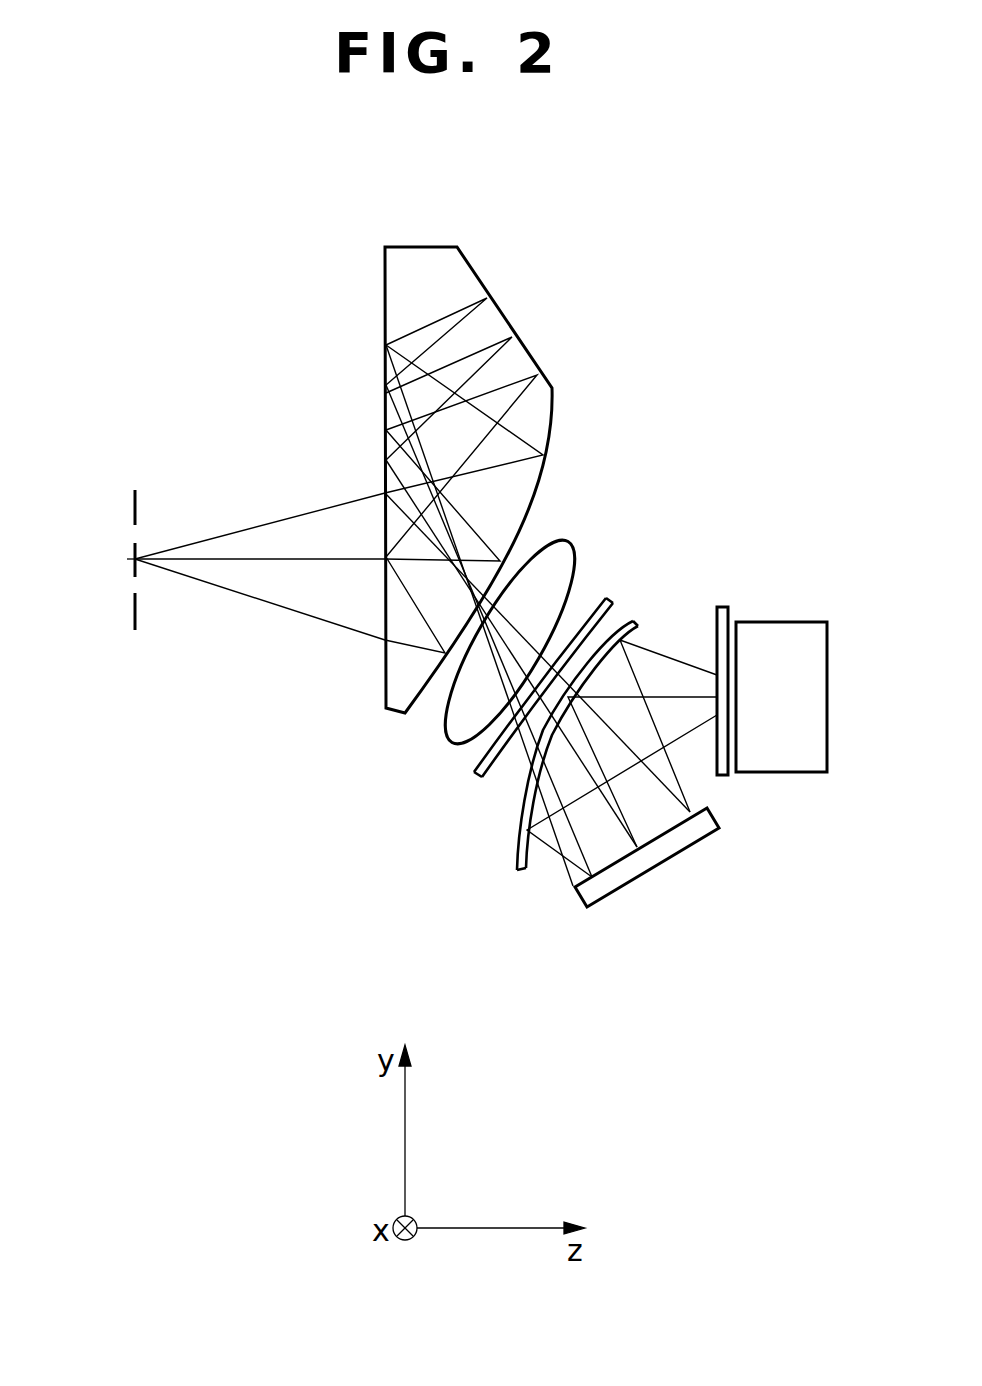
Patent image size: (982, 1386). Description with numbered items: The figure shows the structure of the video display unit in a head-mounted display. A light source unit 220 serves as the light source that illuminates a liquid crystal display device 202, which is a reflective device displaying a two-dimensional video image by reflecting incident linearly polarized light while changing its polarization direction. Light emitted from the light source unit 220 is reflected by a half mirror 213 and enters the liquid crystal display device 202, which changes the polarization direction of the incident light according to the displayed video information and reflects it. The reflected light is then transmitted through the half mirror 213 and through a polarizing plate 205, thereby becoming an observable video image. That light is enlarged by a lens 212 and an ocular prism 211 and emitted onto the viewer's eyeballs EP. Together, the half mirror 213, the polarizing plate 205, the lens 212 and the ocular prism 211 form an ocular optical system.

The viewer's eyeballs EP is at (133, 510).
The ocular prism 211 is at (419, 262).
The lens 212 is at (450, 730).
The polarizing plate 205 is at (474, 773).
The half mirror 213 is at (515, 842).
The liquid crystal display device 202 is at (618, 867).
The light source unit 220 is at (795, 618).